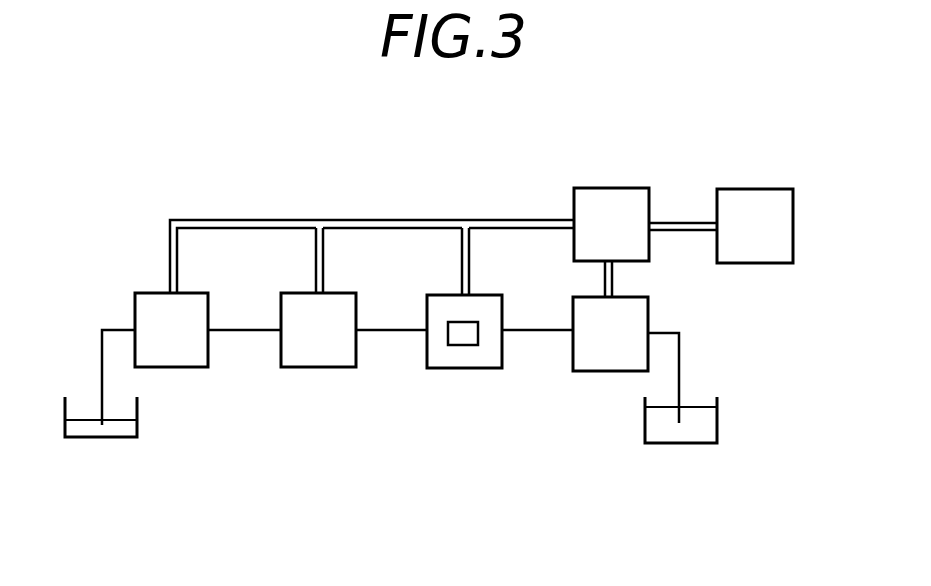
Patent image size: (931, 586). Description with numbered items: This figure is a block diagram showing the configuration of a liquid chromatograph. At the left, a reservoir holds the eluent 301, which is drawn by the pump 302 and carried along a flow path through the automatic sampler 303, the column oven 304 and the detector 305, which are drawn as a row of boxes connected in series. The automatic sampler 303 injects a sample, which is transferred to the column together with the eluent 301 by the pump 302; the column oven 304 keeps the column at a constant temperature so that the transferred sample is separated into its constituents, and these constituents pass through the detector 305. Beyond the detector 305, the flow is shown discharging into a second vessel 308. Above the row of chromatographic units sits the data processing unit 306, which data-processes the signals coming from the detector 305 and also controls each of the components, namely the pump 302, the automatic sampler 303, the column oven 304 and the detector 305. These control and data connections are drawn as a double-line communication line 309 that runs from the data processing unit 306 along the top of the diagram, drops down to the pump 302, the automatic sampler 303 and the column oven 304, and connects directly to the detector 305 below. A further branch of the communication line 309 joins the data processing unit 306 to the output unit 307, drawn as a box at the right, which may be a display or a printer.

The eluent 301 is at (110, 440).
The pump 302 is at (185, 370).
The automatic sampler 303 is at (318, 370).
The column oven 304 is at (468, 370).
The detector 305 is at (580, 373).
The data processing unit 306 is at (603, 186).
The output unit 307 is at (750, 188).
The receiving tank 308 is at (700, 445).
The communication line 309 is at (388, 218).